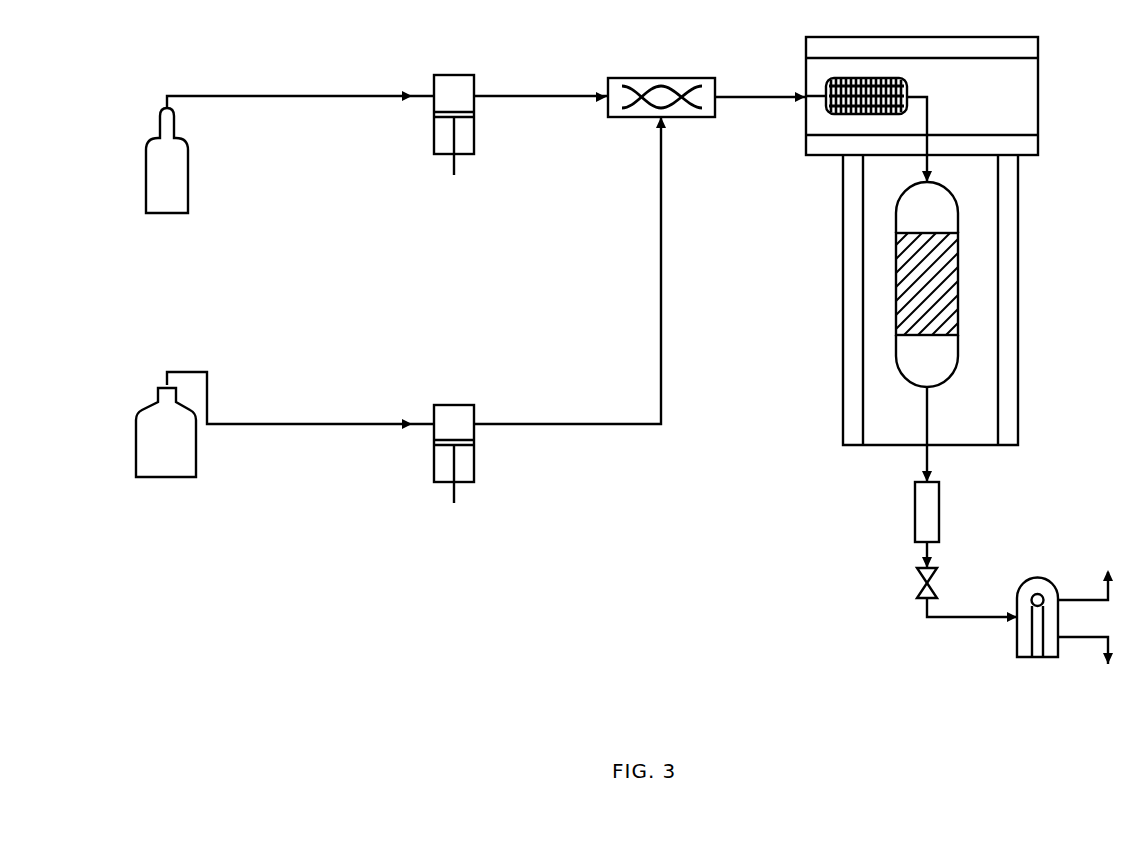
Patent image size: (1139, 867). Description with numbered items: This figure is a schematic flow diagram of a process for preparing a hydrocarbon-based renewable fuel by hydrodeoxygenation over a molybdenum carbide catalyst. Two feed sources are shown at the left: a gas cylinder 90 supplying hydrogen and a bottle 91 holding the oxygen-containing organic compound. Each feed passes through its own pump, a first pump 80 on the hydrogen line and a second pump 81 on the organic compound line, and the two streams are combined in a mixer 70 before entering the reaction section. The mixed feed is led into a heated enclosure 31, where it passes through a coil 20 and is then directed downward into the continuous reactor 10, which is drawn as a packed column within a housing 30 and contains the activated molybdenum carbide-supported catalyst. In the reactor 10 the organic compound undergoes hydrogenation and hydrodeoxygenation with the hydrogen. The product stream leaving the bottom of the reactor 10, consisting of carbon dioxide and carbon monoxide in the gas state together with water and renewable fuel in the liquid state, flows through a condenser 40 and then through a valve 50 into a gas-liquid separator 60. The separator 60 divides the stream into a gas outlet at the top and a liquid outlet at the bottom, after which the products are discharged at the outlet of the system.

The continuous reactor 10 is at (961, 347).
The preheating coil 20 is at (839, 119).
The column housing 30 is at (1022, 271).
The heating box 31 is at (1041, 96).
The condenser 40 is at (943, 501).
The valve 50 is at (943, 583).
The gas-liquid separator 60 is at (1015, 655).
The mixer 70 is at (689, 76).
The first pump 80 is at (432, 113).
The second pump 81 is at (432, 469).
The gas cylinder 90 is at (144, 172).
The solvent bottle 91 is at (133, 431).